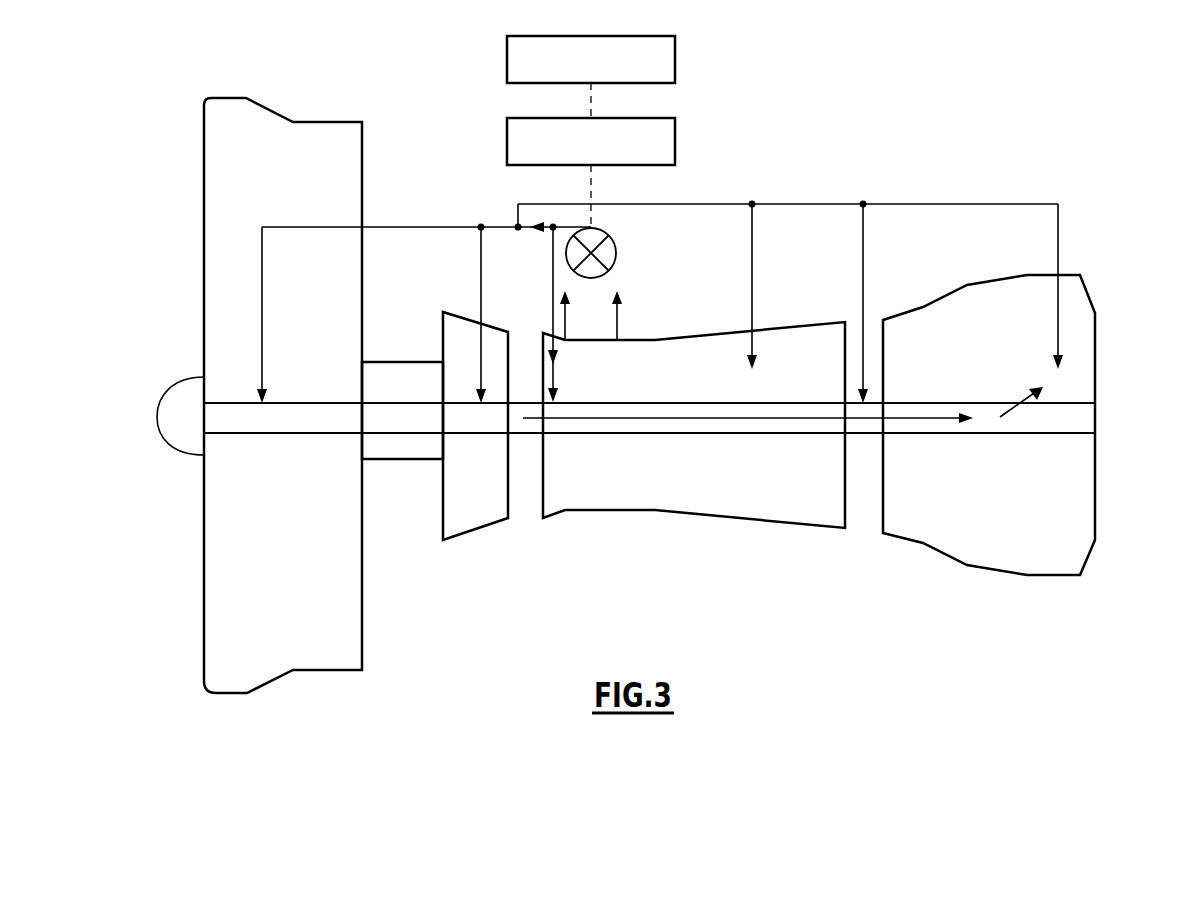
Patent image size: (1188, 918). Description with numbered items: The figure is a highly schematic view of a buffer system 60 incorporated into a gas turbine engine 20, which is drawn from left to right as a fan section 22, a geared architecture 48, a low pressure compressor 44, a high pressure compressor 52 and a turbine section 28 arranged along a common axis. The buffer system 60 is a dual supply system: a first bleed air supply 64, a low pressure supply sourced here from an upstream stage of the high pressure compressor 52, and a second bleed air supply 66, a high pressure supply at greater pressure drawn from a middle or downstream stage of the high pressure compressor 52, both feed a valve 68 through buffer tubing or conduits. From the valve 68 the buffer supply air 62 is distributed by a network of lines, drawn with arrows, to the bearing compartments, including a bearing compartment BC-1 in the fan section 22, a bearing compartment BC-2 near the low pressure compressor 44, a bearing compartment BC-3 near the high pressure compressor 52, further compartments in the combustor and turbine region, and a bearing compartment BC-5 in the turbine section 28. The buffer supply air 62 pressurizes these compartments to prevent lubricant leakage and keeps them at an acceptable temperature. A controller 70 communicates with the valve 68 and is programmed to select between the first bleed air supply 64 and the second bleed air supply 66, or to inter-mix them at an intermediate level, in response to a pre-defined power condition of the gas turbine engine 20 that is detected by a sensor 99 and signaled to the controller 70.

The gas turbine engine 20 is at (1094, 194).
The fan section 22 is at (296, 586).
The turbine section 28 is at (1010, 356).
The low pressure compressor 44 is at (493, 495).
The geared architecture 48 is at (419, 425).
The high pressure compressor 52 is at (718, 495).
The buffer system 60 is at (676, 180).
The buffer supply air 62 is at (262, 323).
The first bleed air supply 64 is at (571, 302).
The second bleed air supply 66 is at (622, 296).
The valve 68 is at (612, 241).
The controller 70 is at (507, 135).
The sensor 99 is at (507, 53).
The bearing compartment BC-1 is at (307, 421).
The bearing compartment BC-2 is at (483, 418).
The bearing compartment BC-3 is at (557, 400).
The bearing compartment BC-5 is at (1048, 383).